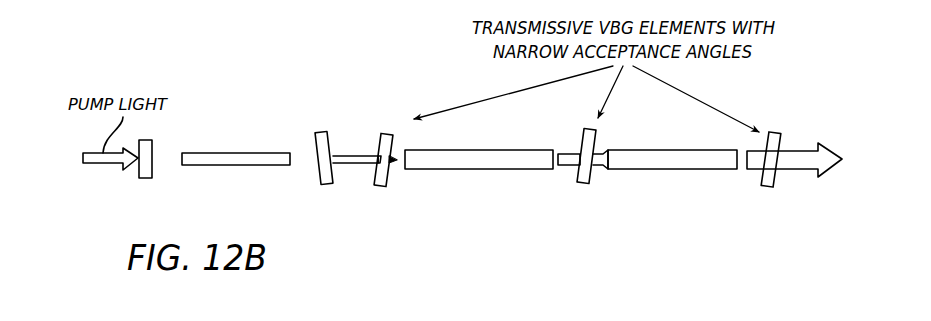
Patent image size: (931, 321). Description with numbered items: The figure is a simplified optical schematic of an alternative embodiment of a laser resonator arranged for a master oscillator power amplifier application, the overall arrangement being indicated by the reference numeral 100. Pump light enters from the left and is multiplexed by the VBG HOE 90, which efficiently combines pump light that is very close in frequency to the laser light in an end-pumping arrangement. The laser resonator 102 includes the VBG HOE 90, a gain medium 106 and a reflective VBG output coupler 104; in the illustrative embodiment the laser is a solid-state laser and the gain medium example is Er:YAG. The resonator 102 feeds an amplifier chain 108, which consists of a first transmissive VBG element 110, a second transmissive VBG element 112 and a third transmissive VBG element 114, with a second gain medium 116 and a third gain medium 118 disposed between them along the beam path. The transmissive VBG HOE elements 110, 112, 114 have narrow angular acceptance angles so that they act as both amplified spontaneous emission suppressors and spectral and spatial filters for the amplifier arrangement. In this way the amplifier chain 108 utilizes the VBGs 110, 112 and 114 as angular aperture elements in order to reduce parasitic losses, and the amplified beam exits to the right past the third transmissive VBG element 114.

The VBG HOE 90 is at (140, 178).
The laser system 100 is at (195, 70).
The laser resonator 102 is at (160, 187).
The reflective VBG output coupler 104 is at (320, 132).
The gain medium 106 is at (237, 153).
The amplifier chain 108 is at (778, 187).
The first transmissive VBG element 110 is at (385, 184).
The second transmissive VBG element 112 is at (588, 184).
The third transmissive VBG element 114 is at (780, 132).
The second gain medium 116 is at (467, 149).
The third gain medium 118 is at (672, 150).